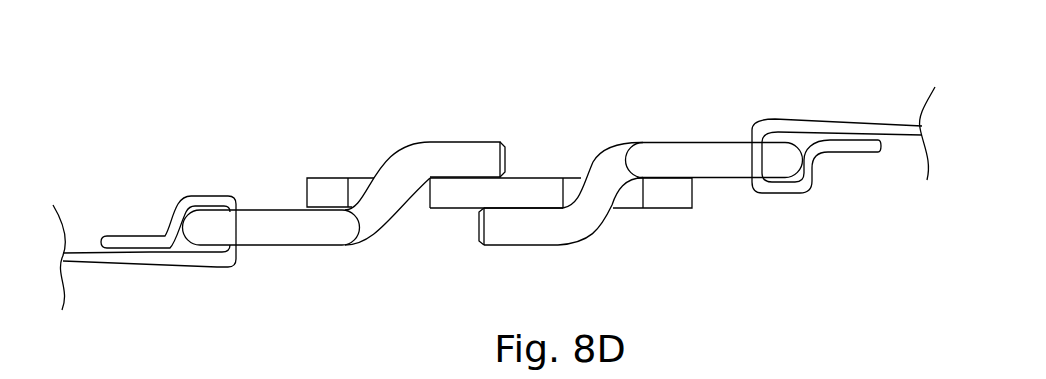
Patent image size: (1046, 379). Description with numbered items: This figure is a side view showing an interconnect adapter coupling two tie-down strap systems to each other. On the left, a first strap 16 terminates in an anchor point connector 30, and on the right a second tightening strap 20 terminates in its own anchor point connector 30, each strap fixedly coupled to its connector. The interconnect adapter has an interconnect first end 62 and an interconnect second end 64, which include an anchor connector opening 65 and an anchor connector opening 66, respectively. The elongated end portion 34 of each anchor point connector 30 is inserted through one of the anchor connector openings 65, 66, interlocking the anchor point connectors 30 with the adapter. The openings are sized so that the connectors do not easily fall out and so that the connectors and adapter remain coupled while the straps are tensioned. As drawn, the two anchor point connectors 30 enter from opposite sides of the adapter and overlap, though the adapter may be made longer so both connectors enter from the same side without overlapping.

The first strap 16 is at (119, 267).
The second tightening strap 20 is at (830, 119).
The anchor point connector 30 is at (493, 196).
The elongated end portion 34 is at (465, 142).
The interconnect first end 62 is at (305, 191).
The interconnect second end 64 is at (692, 195).
The anchor connector opening 65 is at (417, 209).
The anchor connector opening 66 is at (576, 178).